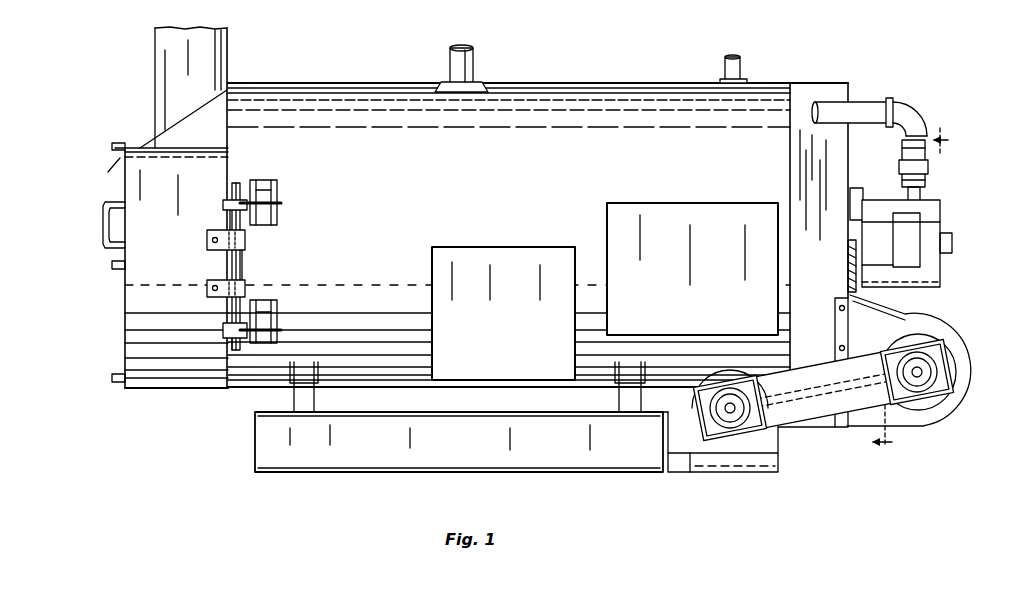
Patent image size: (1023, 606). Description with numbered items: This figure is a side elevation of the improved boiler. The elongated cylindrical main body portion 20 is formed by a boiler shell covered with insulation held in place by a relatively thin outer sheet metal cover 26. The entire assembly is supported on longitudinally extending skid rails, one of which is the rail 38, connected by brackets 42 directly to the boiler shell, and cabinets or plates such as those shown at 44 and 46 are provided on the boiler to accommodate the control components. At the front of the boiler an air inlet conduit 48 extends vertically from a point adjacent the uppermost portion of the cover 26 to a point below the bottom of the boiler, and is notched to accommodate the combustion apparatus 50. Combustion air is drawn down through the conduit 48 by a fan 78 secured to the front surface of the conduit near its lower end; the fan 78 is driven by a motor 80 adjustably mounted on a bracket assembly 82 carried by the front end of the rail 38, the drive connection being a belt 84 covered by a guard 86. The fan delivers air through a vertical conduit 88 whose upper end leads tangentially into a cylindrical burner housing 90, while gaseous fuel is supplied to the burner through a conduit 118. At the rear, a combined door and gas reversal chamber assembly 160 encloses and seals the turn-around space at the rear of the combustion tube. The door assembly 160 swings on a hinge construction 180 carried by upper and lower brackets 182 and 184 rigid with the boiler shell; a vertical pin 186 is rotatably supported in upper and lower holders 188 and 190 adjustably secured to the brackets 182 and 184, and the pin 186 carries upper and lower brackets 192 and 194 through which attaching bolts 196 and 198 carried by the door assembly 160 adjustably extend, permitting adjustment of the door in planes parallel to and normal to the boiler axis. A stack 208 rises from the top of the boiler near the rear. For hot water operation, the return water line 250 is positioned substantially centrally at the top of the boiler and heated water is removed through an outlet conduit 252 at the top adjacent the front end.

The main body portion 20 is at (376, 81).
The outer sheet metal cover 26 is at (315, 103).
The exhaust stack 208 is at (165, 95).
The return water line 250 is at (473, 66).
The outlet conduit 252 is at (742, 67).
The air inlet conduit 48 is at (848, 93).
The cabinet 46 is at (607, 213).
The cabinet 44 is at (538, 262).
The brackets 42 is at (323, 373).
The skid rail 38 is at (489, 455).
The door and gas reversal chamber assembly 160 is at (123, 319).
The hinge construction 180 is at (247, 258).
The upper bracket 182 is at (277, 193).
The lower bracket 184 is at (277, 314).
The vertical pin 186 is at (232, 220).
The upper holder 188 is at (227, 200).
The lower holder 190 is at (223, 332).
The upper bracket 192 is at (213, 240).
The lower bracket 194 is at (212, 288).
The attaching bolt 196 is at (217, 265).
The attaching bolt 198 is at (213, 293).
The vertical conduit 88 is at (860, 286).
The cylindrical burner housing 90 is at (877, 200).
The conduit 118 is at (922, 206).
The combustion apparatus 50 is at (944, 215).
The fan 78 is at (975, 366).
The motor 80 is at (731, 380).
The bracket assembly 82 is at (713, 467).
The belt 84 is at (808, 362).
The guard 86 is at (852, 424).